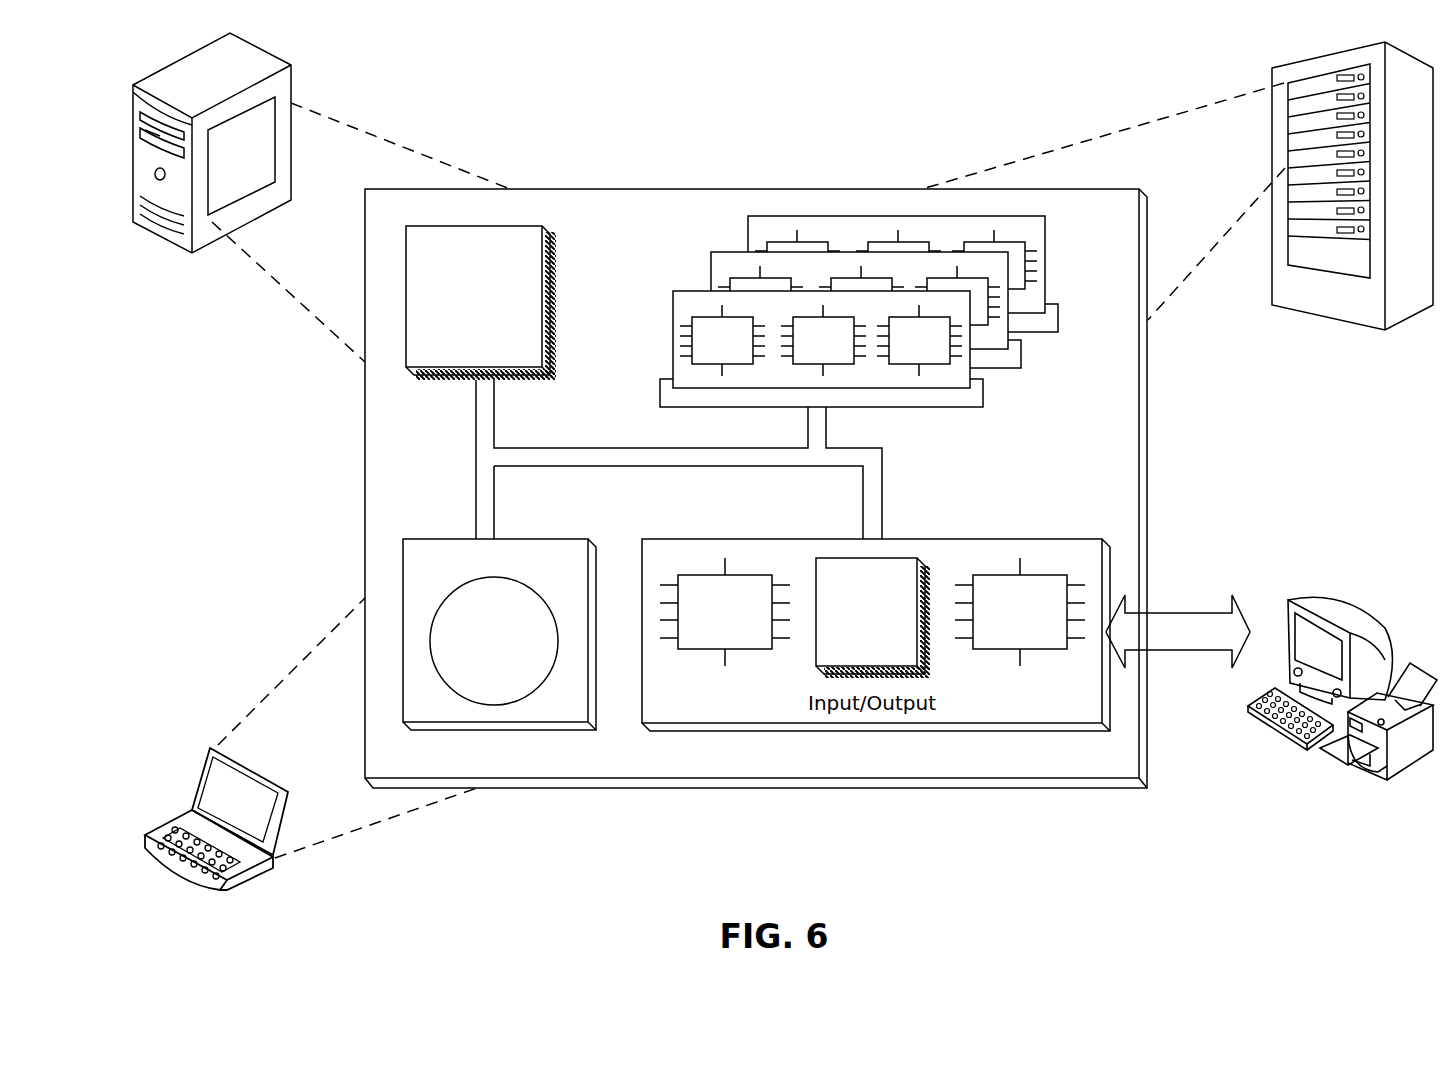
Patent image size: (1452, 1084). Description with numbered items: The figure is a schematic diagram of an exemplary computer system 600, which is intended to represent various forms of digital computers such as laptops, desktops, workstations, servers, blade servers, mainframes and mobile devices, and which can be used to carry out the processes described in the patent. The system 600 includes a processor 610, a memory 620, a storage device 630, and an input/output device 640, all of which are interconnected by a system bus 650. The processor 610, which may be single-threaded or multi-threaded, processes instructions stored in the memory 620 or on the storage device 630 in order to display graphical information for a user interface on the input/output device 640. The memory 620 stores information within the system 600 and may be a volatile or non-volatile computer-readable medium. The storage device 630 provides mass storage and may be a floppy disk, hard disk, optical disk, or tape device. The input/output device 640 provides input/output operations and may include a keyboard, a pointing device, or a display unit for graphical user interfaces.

The computer system 600 is at (783, 459).
The processor 610 is at (481, 303).
The memory 620 is at (1049, 367).
The storage device 630 is at (499, 634).
The input/output device 640 is at (1290, 600).
The system bus 650 is at (677, 466).